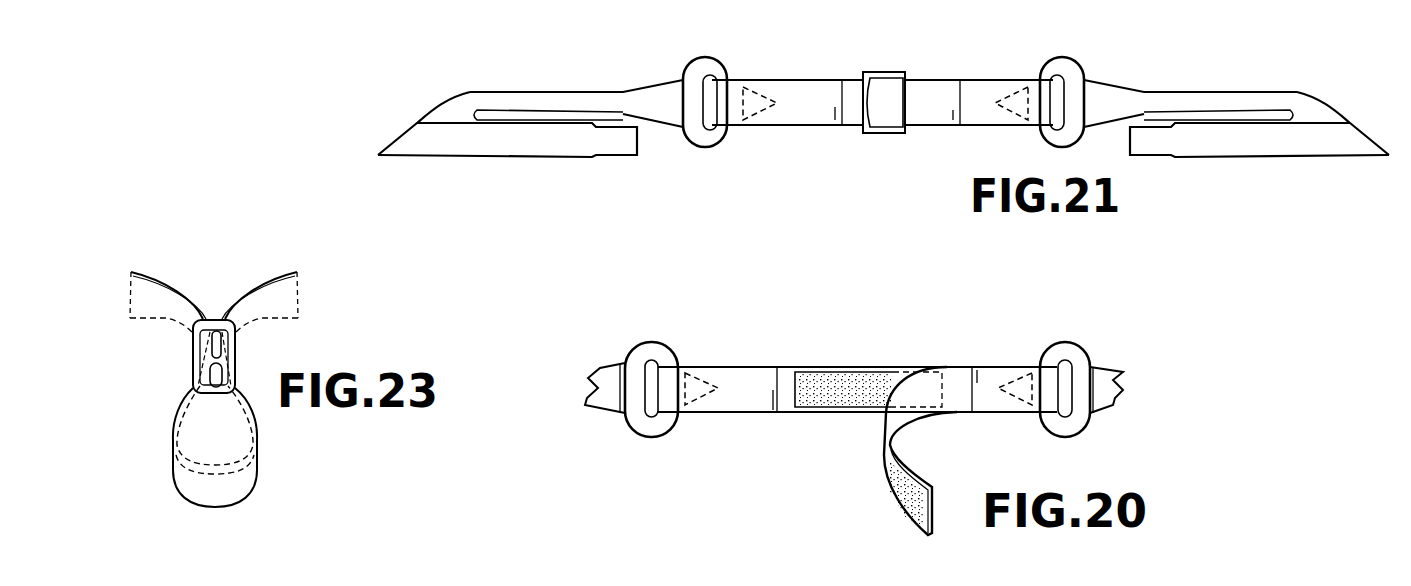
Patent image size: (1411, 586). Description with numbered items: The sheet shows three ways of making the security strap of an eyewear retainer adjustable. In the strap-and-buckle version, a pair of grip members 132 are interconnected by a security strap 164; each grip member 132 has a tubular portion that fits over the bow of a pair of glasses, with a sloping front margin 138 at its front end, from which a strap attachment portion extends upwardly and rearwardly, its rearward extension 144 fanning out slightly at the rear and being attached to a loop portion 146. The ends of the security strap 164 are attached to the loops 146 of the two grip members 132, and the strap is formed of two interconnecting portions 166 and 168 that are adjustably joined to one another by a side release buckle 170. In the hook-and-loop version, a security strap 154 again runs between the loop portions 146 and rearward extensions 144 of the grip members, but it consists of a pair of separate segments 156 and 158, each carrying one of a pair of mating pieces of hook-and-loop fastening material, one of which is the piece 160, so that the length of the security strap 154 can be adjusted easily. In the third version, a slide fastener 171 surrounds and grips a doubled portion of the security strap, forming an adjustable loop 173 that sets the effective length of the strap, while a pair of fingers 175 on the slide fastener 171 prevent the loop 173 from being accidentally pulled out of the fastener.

In FIG. 21, the grip member 132 is at (540, 158).
In FIG. 21, the sloping front margin 138 is at (400, 132).
In FIG. 21, the rearward extension 144 is at (577, 92).
In FIG. 20, the rearward extension 144 is at (605, 367).
In FIG. 21, the loop portion 146 is at (717, 149).
In FIG. 20, the loop portion 146 is at (673, 360).
In FIG. 20, the security strap 154 is at (863, 367).
In FIG. 20, the strap segment 156 is at (745, 397).
In FIG. 20, the strap segment 158 is at (988, 400).
In FIG. 20, the hook-and-loop fastening piece 160 is at (843, 407).
In FIG. 21, the security strap 164 is at (815, 82).
In FIG. 21, the strap portion 166 is at (825, 125).
In FIG. 21, the strap portion 168 is at (973, 88).
In FIG. 21, the side release buckle 170 is at (872, 133).
In FIG. 23, the slide fastener 171 is at (205, 320).
In FIG. 23, the adjustable loop 173 is at (173, 477).
In FIG. 23, the fingers 175 is at (205, 377).